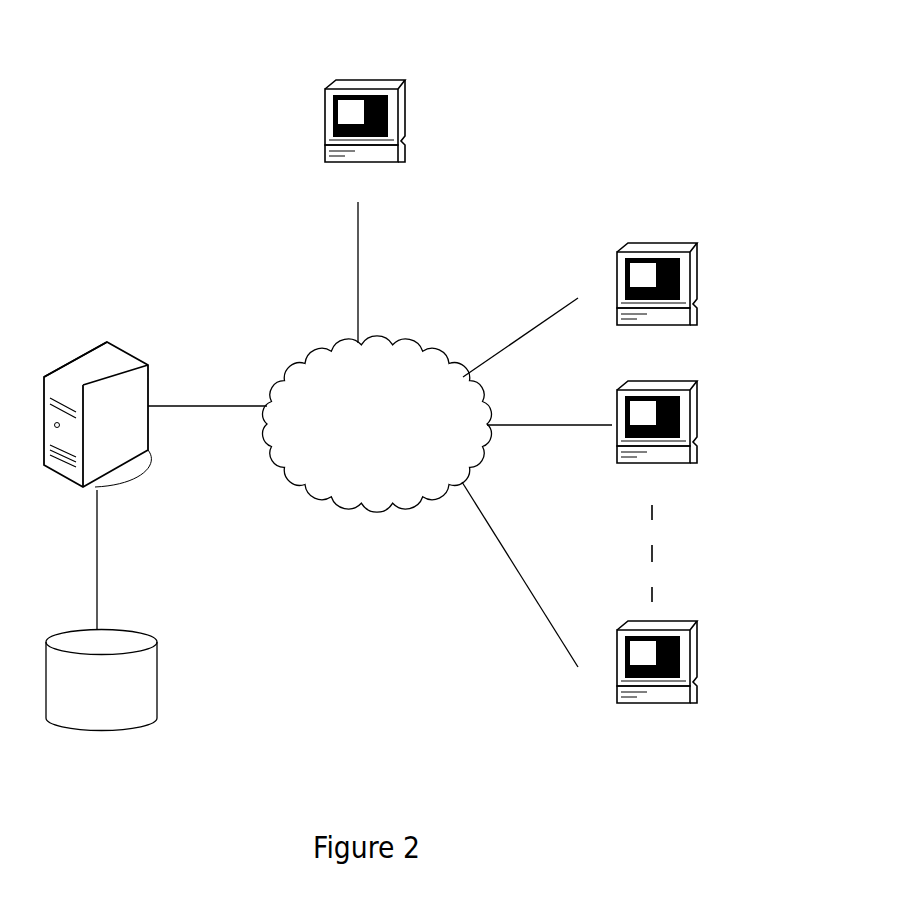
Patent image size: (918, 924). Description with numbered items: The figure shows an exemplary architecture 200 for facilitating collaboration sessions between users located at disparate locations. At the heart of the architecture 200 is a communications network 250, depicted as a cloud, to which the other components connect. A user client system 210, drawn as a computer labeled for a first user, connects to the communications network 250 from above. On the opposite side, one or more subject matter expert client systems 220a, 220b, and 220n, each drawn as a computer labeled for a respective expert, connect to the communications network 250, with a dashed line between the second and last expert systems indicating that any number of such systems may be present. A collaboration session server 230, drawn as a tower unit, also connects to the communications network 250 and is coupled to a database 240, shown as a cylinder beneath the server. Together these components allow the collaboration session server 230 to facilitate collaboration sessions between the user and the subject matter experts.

The architecture 200 is at (313, 745).
The user client system 210 is at (322, 108).
The subject matter expert client system 220a is at (690, 270).
The subject matter expert client system 220b is at (690, 425).
The subject matter expert client system 220n is at (690, 667).
The collaboration session server 230 is at (107, 342).
The database 240 is at (157, 700).
The communications network 250 is at (343, 500).